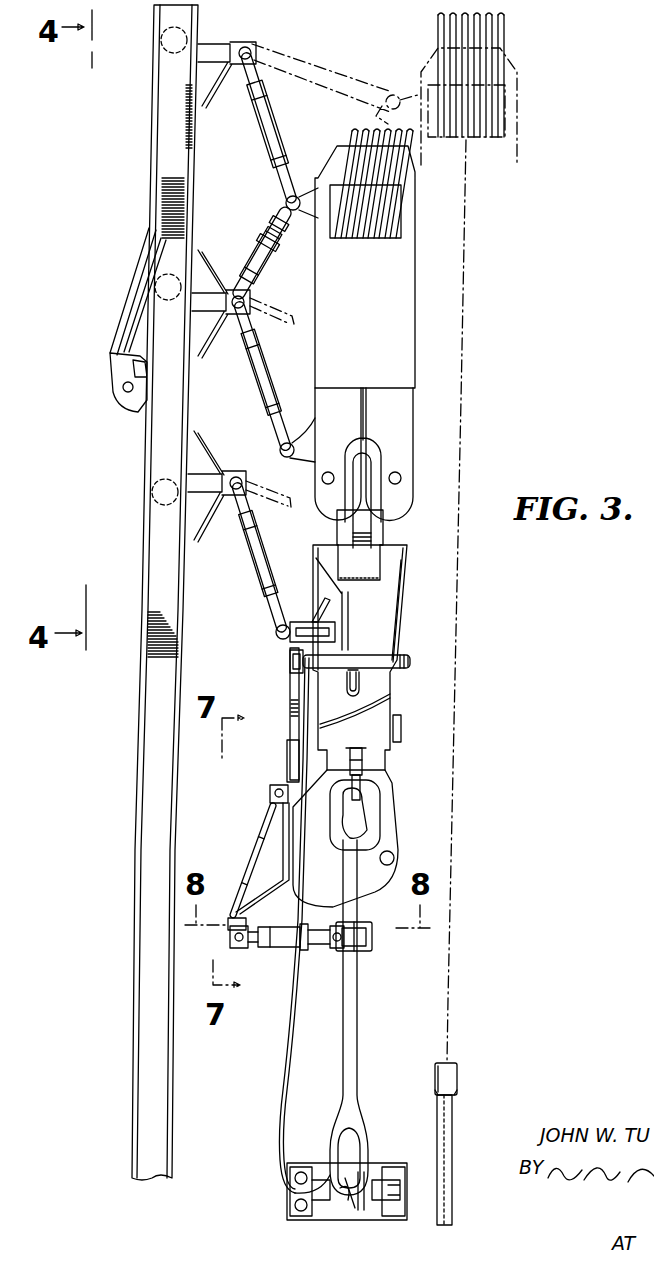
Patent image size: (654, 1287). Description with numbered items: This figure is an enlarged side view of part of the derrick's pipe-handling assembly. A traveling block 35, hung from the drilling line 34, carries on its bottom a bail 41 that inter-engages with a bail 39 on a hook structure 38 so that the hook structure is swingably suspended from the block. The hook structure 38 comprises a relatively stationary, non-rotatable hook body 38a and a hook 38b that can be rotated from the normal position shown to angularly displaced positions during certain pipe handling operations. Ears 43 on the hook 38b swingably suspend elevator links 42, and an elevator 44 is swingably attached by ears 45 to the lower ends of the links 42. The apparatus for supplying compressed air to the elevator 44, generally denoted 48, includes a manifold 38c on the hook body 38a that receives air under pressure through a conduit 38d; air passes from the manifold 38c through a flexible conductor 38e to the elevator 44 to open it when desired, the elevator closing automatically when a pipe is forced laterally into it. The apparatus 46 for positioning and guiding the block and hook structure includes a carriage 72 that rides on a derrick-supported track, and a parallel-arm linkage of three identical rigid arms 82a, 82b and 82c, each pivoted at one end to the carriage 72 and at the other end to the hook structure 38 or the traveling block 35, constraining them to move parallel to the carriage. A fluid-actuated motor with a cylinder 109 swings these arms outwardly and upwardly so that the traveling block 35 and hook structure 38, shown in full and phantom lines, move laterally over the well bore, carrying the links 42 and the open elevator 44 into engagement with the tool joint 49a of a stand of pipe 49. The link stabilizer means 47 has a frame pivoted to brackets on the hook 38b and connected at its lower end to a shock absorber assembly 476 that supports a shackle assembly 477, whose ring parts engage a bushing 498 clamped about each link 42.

The carriage 72 is at (150, 120).
The rigid arm 82c is at (310, 62).
The rigid arm 82b is at (262, 370).
The rigid arm 82a is at (262, 570).
The cylinder 109 is at (248, 254).
The apparatus for positioning and guiding the block and hook structure 46 is at (112, 328).
The drilling line 34 is at (505, 22).
The traveling block 35 is at (525, 106).
The bail 41 is at (382, 497).
The bail 39 is at (368, 532).
The hook structure 38 is at (425, 598).
The hook body 38a is at (404, 562).
The conduit 38d is at (320, 566).
The manifold 38c is at (412, 662).
The flexible conductor 38e is at (299, 764).
The hook 38b is at (394, 782).
The apparatus for supplying compressed air to the elevator 48 is at (286, 688).
The ears 43 is at (368, 770).
The link stabilizer means 47 is at (254, 840).
The shock absorber assembly 476 is at (288, 946).
The shackle assembly 477 is at (378, 948).
The elevator links 42 is at (362, 996).
The bushing 498 is at (333, 958).
The stand of pipe 49 is at (436, 1116).
The tool joint 49a is at (458, 1082).
The elevator 44 is at (284, 1205).
The ears 45 is at (356, 1208).